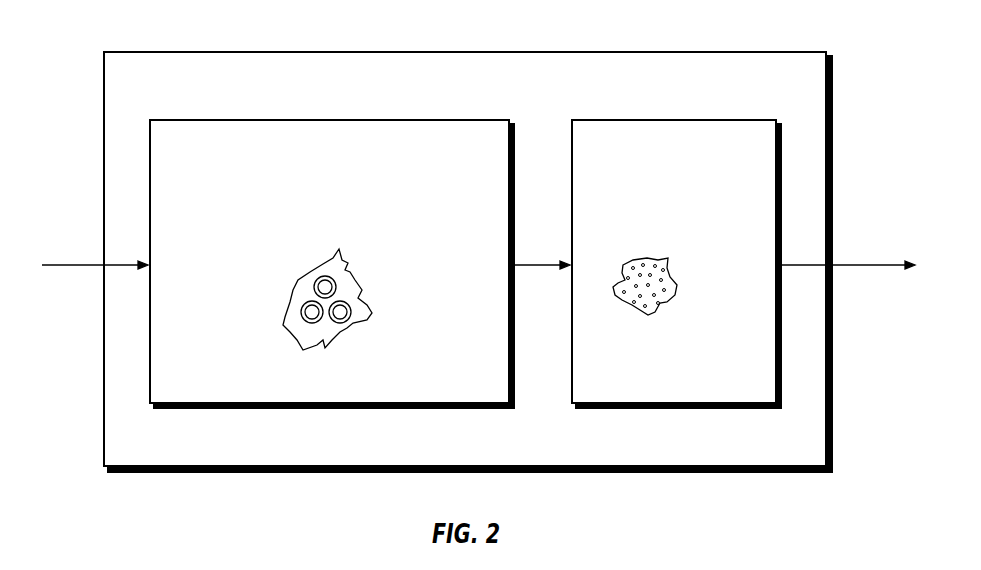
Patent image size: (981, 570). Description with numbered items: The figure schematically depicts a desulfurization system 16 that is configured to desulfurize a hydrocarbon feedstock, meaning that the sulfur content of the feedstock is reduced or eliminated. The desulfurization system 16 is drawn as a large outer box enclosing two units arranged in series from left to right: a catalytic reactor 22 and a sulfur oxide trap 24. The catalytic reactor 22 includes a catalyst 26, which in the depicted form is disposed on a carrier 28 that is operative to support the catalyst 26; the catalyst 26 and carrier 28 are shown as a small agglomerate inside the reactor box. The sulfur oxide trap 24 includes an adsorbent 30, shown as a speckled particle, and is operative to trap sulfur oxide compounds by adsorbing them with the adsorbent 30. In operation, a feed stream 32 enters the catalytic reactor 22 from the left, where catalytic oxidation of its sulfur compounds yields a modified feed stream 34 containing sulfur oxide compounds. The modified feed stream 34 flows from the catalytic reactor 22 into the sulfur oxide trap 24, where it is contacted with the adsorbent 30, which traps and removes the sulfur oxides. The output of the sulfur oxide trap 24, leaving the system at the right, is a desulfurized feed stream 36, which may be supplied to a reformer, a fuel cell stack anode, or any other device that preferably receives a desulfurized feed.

The desulfurization system 16 is at (608, 52).
The catalytic reactor 22 is at (335, 120).
The sulfur oxide trap 24 is at (660, 120).
The catalyst 26 is at (340, 332).
The carrier 28 is at (342, 308).
The adsorbent 30 is at (668, 278).
The feed stream 32 is at (80, 268).
The modified feed stream 34 is at (530, 265).
The desulfurized feed stream 36 is at (860, 265).